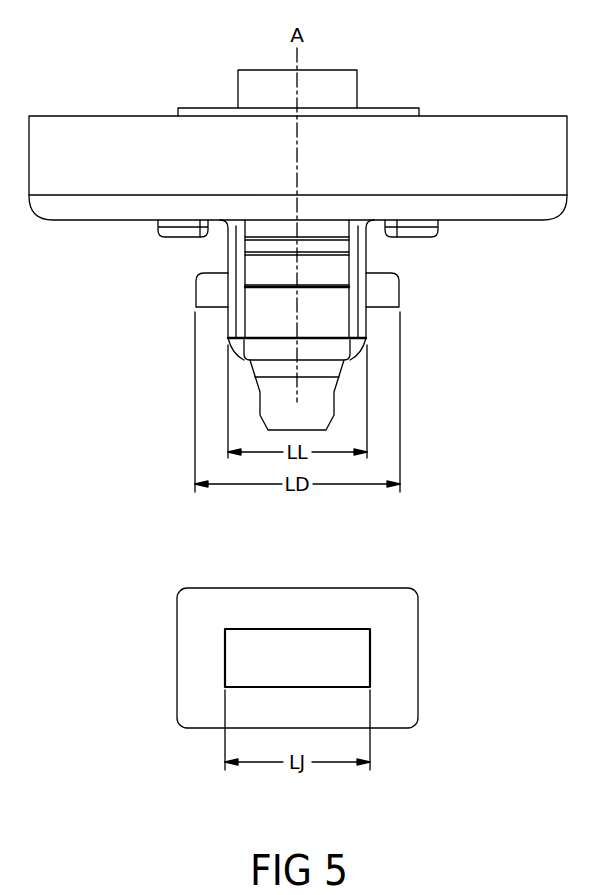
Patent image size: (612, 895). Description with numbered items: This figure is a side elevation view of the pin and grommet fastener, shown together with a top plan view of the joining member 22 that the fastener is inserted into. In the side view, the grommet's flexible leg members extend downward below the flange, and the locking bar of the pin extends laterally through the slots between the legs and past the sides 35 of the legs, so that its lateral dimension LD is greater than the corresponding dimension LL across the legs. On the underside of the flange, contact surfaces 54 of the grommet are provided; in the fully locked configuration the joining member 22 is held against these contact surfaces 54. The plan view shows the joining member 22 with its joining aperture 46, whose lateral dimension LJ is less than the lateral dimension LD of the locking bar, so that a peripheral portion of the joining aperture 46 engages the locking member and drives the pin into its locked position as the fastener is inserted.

The joining member 22 is at (297, 588).
The sides of the legs 35 is at (227, 320).
The joining aperture 46 is at (370, 658).
The contact surface 54 is at (182, 238).